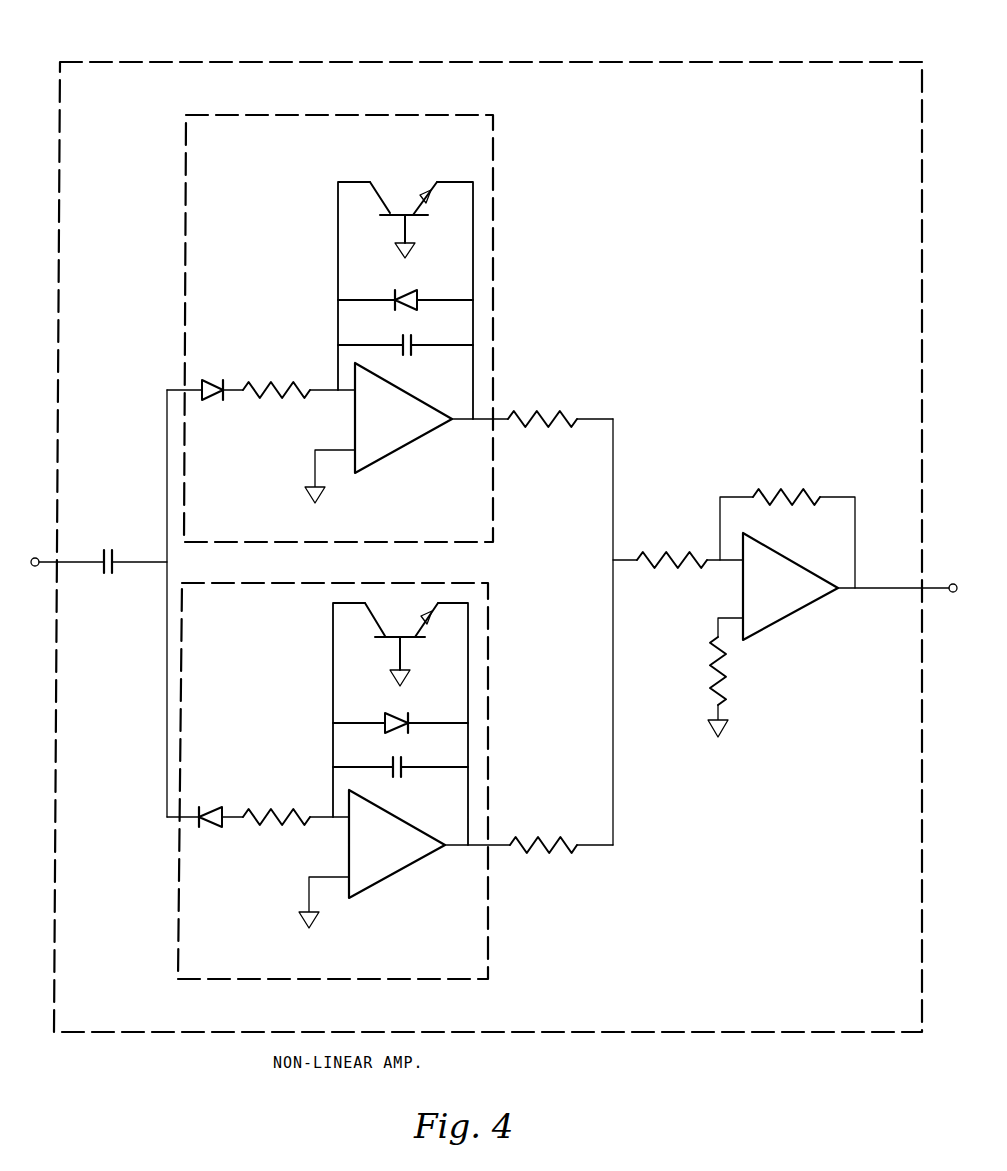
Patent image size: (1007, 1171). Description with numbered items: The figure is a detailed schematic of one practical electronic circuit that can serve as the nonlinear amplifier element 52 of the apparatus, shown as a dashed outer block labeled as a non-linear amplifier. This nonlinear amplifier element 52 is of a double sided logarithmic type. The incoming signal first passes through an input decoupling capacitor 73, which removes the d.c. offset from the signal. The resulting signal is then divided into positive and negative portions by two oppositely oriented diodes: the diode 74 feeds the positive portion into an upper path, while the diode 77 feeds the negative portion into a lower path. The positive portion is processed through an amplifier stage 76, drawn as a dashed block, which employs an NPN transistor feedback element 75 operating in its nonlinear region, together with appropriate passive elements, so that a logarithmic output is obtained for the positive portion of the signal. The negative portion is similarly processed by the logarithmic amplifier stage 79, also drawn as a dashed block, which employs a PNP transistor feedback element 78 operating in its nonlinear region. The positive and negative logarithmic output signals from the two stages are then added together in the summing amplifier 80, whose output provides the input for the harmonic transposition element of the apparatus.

The nonlinear amplifier element 52 is at (583, 62).
The input decoupling capacitor 73 is at (112, 543).
The diode 74 is at (213, 372).
The NPN transistor feedback element 75 is at (403, 208).
The amplifier stage 76 is at (531, 318).
The diode 77 is at (212, 799).
The PNP transistor feedback element 78 is at (401, 639).
The logarithmic amplifier stage 79 is at (488, 780).
The summing amplifier 80 is at (781, 613).